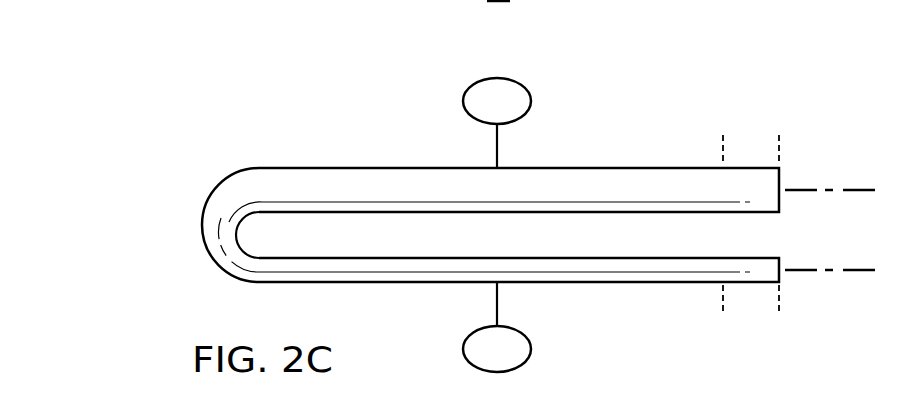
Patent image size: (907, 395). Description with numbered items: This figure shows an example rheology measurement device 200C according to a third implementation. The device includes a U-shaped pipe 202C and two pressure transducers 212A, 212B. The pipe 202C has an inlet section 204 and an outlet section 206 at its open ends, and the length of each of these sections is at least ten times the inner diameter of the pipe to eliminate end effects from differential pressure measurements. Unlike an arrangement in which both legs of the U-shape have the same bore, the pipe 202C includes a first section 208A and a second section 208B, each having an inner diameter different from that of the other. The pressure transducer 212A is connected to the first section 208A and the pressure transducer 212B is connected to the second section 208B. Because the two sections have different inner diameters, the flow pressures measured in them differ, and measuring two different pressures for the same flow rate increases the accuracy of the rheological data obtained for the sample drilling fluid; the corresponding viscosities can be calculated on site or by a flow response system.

The rheology measurement device 200C is at (381, 132).
The pipe 202C is at (223, 152).
The inlet section 204 is at (779, 135).
The outlet section 206 is at (779, 313).
The first section 208A is at (656, 141).
The second section 208B is at (656, 306).
The pressure transducer 212A is at (531, 100).
The pressure transducer 212B is at (531, 350).